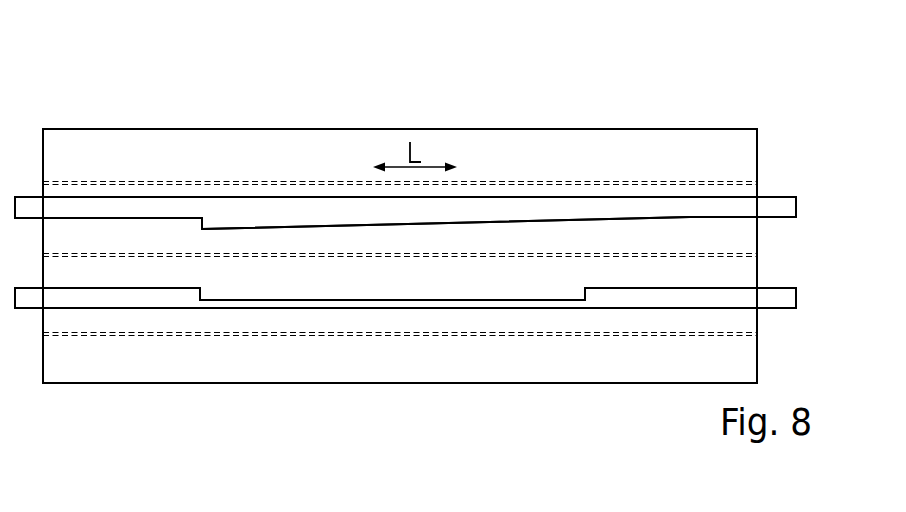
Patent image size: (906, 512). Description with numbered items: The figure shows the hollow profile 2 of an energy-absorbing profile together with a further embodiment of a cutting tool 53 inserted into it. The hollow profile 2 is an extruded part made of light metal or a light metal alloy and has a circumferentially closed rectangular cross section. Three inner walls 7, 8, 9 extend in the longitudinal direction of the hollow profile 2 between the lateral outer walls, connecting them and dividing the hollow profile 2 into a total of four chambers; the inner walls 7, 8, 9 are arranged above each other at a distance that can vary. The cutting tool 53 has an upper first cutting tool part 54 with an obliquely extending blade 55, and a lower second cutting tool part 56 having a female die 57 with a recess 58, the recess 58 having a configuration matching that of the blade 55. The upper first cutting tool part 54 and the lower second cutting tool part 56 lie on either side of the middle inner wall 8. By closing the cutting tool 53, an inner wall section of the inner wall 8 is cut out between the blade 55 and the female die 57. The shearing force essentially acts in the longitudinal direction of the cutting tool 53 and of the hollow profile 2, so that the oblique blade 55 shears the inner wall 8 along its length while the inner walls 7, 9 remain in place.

The hollow profile 2 is at (655, 118).
The inner wall 7 is at (543, 183).
The inner wall 8 is at (108, 257).
The inner wall 9 is at (166, 337).
The cutting tool 53 is at (113, 183).
The upper first cutting tool part 54 is at (163, 207).
The blade 55 is at (298, 217).
The lower second cutting tool part 56 is at (613, 300).
The female die 57 is at (332, 312).
The recess 58 is at (432, 300).